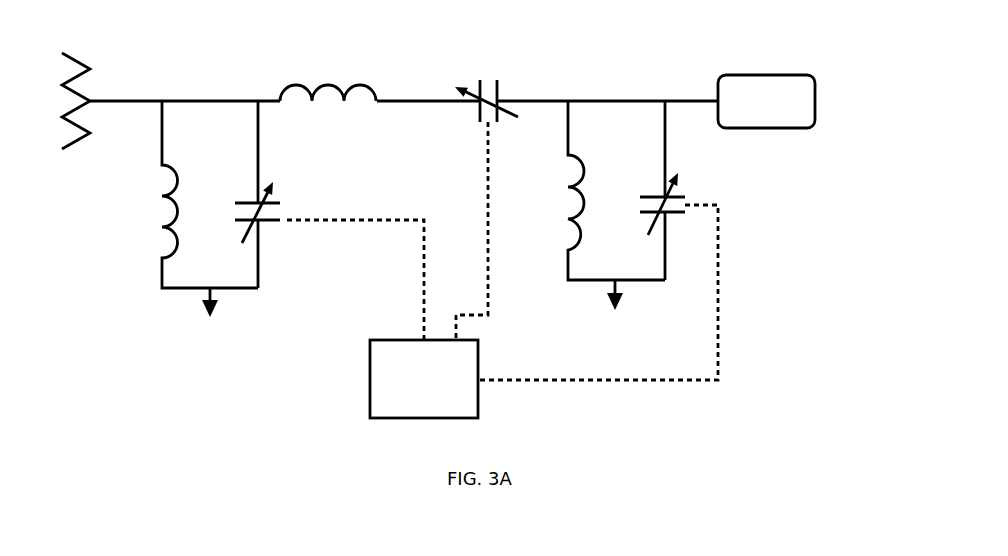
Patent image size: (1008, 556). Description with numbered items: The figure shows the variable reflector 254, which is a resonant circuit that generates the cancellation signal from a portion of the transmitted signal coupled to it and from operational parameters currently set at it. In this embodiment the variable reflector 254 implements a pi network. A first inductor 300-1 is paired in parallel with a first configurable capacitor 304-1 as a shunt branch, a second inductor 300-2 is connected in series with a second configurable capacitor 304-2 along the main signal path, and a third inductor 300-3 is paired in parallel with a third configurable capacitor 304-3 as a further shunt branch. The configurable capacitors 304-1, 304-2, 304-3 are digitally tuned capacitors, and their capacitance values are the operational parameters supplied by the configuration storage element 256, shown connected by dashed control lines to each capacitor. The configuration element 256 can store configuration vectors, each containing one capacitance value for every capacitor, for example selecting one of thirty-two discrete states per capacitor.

The variable reflector 254 is at (796, 204).
The configuration storage element 256 is at (370, 380).
The first inductor 300-1 is at (160, 222).
The second inductor 300-2 is at (329, 85).
The third inductor 300-3 is at (568, 207).
The first configurable capacitor 304-1 is at (282, 200).
The second configurable capacitor 304-2 is at (497, 93).
The third configurable capacitor 304-3 is at (683, 182).